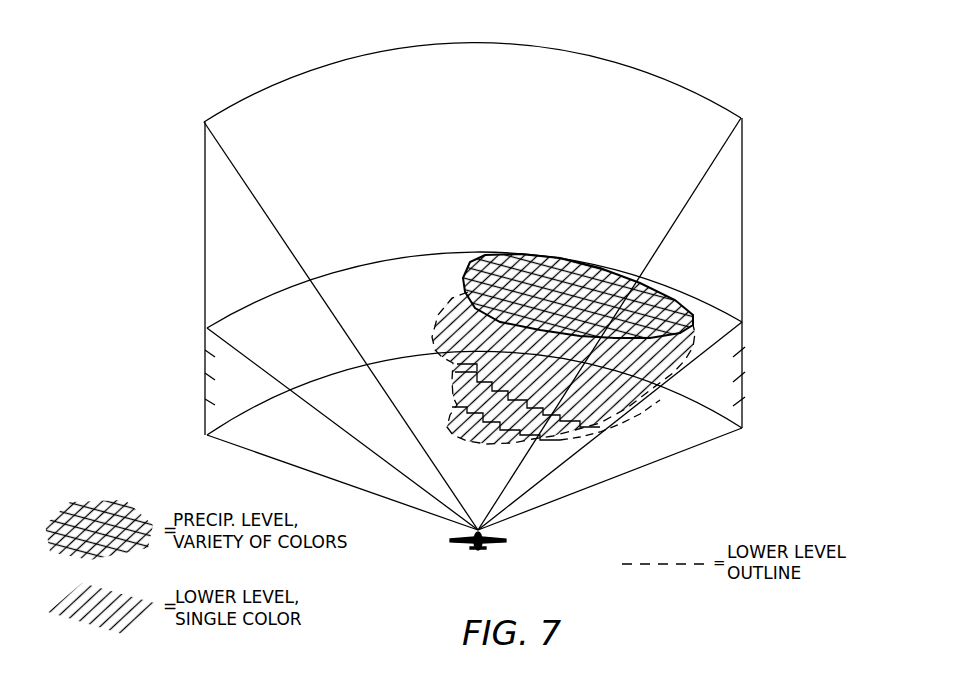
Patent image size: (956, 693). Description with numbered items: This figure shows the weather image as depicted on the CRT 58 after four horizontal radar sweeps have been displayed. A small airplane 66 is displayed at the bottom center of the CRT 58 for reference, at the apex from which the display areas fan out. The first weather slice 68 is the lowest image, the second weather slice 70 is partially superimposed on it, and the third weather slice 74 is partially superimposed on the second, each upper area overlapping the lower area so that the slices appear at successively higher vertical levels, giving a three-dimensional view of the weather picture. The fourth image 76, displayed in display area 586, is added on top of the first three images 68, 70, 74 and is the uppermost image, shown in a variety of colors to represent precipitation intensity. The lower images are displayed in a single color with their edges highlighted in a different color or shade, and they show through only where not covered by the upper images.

The CRT 58 is at (205, 188).
The display area 586 is at (722, 324).
The fourth image 76 is at (478, 263).
The third weather slice 74 is at (446, 315).
The second weather slice 70 is at (455, 389).
The first weather slice 68 is at (455, 428).
The airplane 66 is at (478, 549).